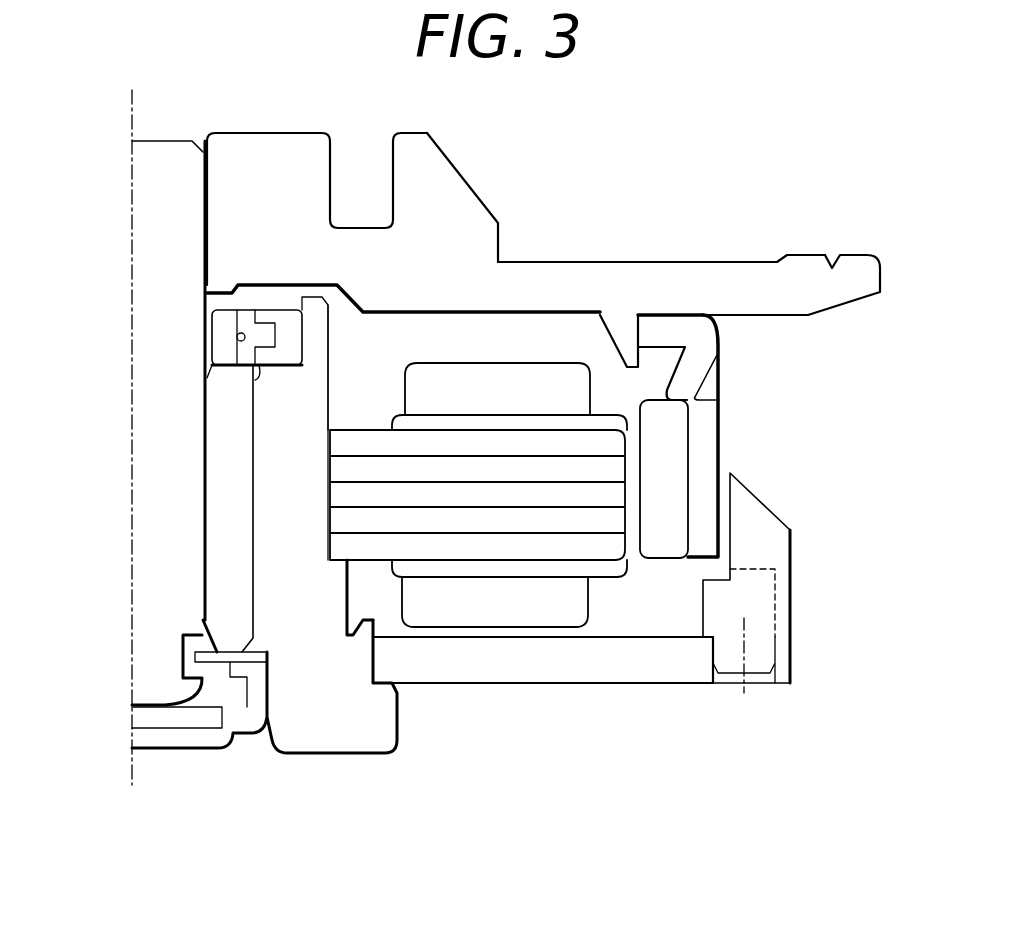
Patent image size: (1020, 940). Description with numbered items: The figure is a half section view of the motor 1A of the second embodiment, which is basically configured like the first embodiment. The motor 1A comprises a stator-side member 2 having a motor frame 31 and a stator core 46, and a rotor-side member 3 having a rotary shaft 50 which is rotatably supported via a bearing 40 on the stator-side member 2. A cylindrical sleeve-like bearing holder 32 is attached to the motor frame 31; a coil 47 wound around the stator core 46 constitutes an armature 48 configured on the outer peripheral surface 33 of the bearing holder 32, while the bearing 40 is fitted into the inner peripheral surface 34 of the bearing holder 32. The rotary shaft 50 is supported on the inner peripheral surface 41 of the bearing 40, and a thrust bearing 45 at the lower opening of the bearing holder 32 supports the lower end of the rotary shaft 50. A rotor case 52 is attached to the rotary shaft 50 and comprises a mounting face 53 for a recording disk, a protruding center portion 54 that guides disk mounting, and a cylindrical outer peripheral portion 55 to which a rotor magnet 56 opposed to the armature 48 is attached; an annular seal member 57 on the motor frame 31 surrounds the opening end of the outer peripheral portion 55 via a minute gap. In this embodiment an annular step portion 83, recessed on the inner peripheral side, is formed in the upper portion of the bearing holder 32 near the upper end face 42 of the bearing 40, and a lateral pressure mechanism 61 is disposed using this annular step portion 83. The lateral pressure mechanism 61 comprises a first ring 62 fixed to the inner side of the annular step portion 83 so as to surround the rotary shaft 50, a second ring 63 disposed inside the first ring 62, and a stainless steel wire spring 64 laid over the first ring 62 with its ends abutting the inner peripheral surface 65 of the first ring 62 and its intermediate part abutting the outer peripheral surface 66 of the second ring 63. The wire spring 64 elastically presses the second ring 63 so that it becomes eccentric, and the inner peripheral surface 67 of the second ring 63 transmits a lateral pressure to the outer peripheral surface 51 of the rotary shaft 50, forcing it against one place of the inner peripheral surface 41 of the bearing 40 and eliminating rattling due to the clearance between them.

The motor 1A is at (738, 165).
The stator-side member 2 is at (696, 697).
The rotor-side member 3 is at (726, 247).
The motor frame 31 is at (473, 672).
The bearing holder 32 is at (367, 740).
The outer peripheral surface 33 is at (330, 538).
The inner peripheral surface 34 is at (252, 570).
The bearing 40 is at (213, 573).
The inner peripheral surface 41 is at (202, 558).
The upper end face 42 is at (203, 368).
The thrust bearing 45 is at (193, 717).
The stator core 46 is at (517, 550).
The coil 47 is at (573, 602).
The armature 48 is at (667, 728).
The rotary shaft 50 is at (148, 331).
The outer peripheral surface 51 is at (207, 512).
The rotor case 52 is at (633, 277).
The mounting face 53 is at (800, 252).
The center portion 54 is at (457, 198).
The outer peripheral portion 55 is at (705, 443).
The rotor magnet 56 is at (668, 428).
The annular seal member 57 is at (760, 535).
The lateral pressure mechanism 61 is at (307, 283).
The first ring 62 is at (296, 291).
The second ring 63 is at (223, 323).
The wire spring 64 is at (240, 333).
The inner peripheral surface 65 is at (272, 322).
The outer peripheral surface 66 is at (200, 352).
The inner peripheral surface 67 is at (203, 340).
The annular step portion 83 is at (290, 358).